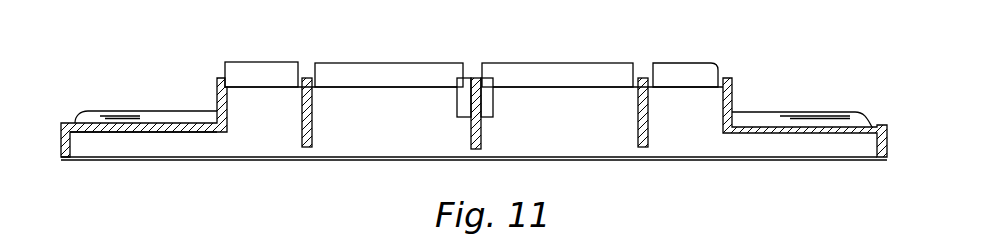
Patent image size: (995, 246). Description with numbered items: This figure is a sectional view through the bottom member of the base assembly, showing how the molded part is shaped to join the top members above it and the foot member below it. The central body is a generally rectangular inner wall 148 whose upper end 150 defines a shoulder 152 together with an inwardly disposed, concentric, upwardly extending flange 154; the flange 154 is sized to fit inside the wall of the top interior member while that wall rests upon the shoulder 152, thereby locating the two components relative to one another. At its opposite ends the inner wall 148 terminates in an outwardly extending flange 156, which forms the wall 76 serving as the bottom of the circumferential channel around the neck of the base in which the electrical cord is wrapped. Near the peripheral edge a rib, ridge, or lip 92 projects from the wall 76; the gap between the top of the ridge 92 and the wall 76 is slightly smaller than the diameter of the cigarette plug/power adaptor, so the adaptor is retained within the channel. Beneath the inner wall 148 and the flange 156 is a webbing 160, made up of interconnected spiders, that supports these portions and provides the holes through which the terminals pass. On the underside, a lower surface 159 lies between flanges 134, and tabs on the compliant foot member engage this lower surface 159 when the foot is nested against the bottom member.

The inner wall 148 is at (577, 125).
The flanges 134 is at (76, 147).
The lower surface 159 is at (172, 133).
The wall 76 is at (146, 76).
The outwardly extending flange 156 is at (162, 118).
The ridge 92 is at (115, 114).
The webbing 160 is at (313, 120).
The upper end 150 is at (676, 52).
The flange 154 is at (576, 77).
The shoulder 152 is at (728, 77).